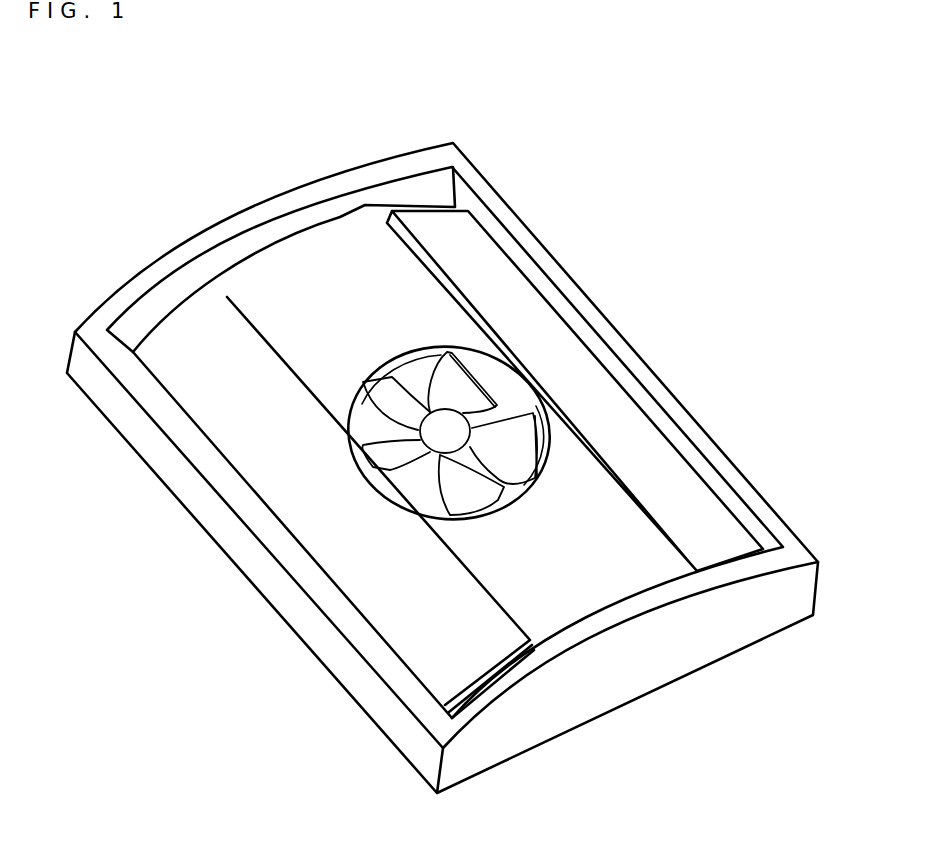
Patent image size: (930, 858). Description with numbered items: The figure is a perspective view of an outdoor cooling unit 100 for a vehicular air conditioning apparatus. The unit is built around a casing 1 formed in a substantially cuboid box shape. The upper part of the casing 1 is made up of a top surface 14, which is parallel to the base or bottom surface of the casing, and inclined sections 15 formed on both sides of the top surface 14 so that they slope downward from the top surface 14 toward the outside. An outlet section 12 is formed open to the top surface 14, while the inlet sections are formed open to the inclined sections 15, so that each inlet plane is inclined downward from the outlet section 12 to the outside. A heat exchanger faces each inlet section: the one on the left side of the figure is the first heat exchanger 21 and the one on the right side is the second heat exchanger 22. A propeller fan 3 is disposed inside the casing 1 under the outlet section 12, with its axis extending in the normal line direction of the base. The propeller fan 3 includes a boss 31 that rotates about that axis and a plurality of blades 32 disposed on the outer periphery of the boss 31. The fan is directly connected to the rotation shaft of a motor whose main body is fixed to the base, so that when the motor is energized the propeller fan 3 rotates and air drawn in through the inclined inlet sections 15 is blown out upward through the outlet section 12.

The outdoor cooling unit 100 is at (652, 809).
The casing 1 is at (690, 687).
The outlet section 12 is at (413, 353).
The top surface 14 is at (297, 270).
The inclined sections 15 is at (190, 307).
The first heat exchanger 21 is at (357, 578).
The second heat exchanger 22 is at (645, 443).
The propeller fan 3 is at (457, 330).
The boss 31 is at (462, 407).
The blades 32 is at (498, 432).